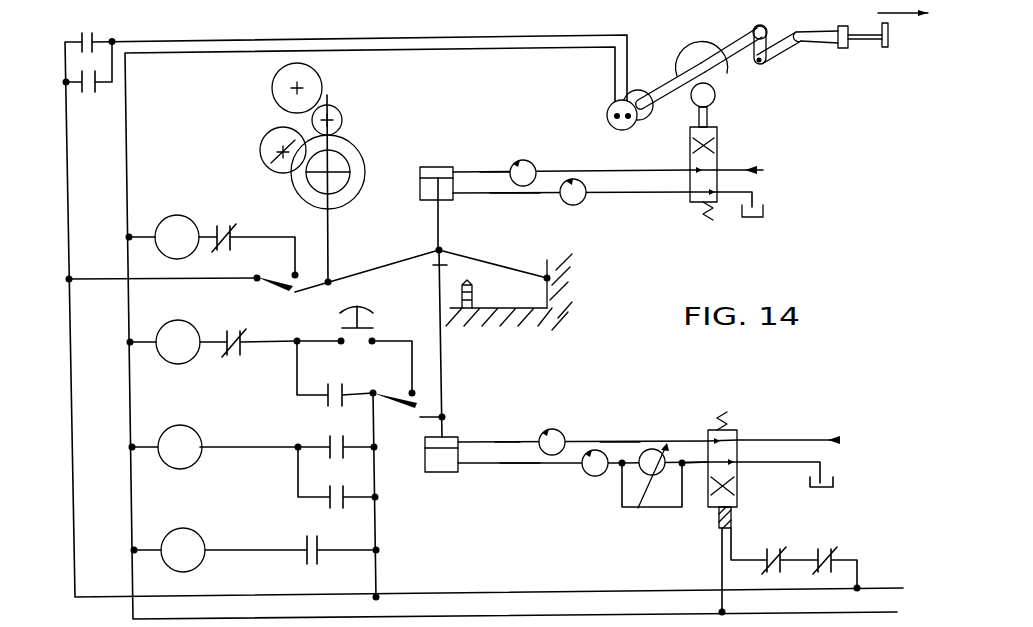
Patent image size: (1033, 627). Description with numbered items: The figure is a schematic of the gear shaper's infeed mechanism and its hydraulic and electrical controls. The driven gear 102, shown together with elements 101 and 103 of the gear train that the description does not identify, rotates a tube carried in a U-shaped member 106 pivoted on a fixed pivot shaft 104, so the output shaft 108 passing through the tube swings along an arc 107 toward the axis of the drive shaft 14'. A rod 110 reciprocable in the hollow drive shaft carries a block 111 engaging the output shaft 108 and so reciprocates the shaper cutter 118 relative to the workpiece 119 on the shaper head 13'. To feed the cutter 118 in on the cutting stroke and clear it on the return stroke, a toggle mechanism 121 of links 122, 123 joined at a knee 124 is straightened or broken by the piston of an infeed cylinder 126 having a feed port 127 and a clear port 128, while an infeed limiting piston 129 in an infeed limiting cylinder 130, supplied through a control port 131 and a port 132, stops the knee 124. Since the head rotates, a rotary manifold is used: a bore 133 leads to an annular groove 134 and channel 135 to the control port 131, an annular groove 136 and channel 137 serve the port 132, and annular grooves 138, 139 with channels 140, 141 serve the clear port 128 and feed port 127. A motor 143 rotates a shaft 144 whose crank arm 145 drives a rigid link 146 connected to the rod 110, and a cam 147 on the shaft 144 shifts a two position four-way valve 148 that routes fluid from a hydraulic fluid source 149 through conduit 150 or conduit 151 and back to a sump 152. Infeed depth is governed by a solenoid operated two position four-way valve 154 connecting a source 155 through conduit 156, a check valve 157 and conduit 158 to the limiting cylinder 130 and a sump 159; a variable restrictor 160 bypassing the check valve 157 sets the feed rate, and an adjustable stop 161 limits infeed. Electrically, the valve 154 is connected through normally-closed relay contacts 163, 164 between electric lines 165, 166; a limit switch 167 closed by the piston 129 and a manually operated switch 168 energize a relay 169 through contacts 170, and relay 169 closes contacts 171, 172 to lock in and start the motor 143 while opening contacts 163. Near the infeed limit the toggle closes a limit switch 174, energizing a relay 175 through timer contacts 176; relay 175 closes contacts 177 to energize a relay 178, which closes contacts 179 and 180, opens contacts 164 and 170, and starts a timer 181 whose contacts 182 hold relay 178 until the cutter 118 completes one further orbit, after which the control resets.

The motor 101 is at (318, 72).
The driven gear 102 is at (349, 142).
The pinion 103 is at (334, 107).
The pivot shaft 104 is at (330, 119).
The U-shaped member 106 is at (327, 240).
The arc 107 is at (364, 157).
The output shaft 108 is at (862, 40).
The rod 110 is at (812, 32).
The block 111 is at (840, 48).
The shaper cutter 118 is at (310, 186).
The workpiece 119 is at (267, 137).
The toggle mechanism 121 is at (572, 252).
The link 122 is at (490, 263).
The link 123 is at (357, 273).
The knee 124 is at (443, 246).
The infeed cylinder 126 is at (430, 167).
The feed port 127 is at (455, 171).
The clear port 128 is at (456, 198).
The infeed limiting piston 129 is at (444, 355).
The infeed limiting cylinder 130 is at (440, 473).
The control port 131 is at (462, 468).
The port 132 is at (462, 440).
The bore 133 is at (613, 472).
The annular groove 134 is at (590, 473).
The channel 135 is at (523, 468).
The annular groove 136 is at (560, 432).
The channel 137 is at (507, 438).
The annular groove 138 is at (578, 204).
The annular groove 139 is at (537, 158).
The channel 140 is at (505, 197).
The channel 141 is at (498, 163).
The motor 143 is at (614, 106).
The shaft 144 is at (668, 91).
The crank arm 145 is at (771, 34).
The rigid link 146 is at (738, 57).
The cam 147 is at (710, 41).
The two position four-way valve 148 is at (717, 126).
The hydraulic fluid source 149 is at (771, 162).
The conduit 150 is at (603, 168).
The conduit 151 is at (682, 195).
The sump 152 is at (793, 222).
The two position four-way valve 154 is at (737, 495).
The source 155 is at (838, 440).
The conduit 156 is at (693, 467).
The check valve 157 is at (656, 489).
The conduit 158 is at (613, 440).
The sump 159 is at (863, 488).
The variable restrictor 160 is at (665, 484).
The adjustable stop 161 is at (472, 284).
The normally-closed relay contacts 163 is at (830, 552).
The normally-closed relay contacts 164 is at (783, 552).
The electric line 165 is at (863, 587).
The electric line 166 is at (878, 612).
The normally-open limit switch 167 is at (403, 395).
The normally-open manually operated switch 168 is at (365, 322).
The relay 169 is at (163, 364).
The normally-closed contacts 170 is at (217, 353).
The normally-open relay contacts 171 is at (327, 391).
The normally-open relay contacts 172 is at (79, 39).
The normally-open limit switch 174 is at (273, 289).
The relay 175 is at (196, 210).
The normally-closed timer contacts 176 is at (213, 247).
The normally-open relay contacts 177 is at (328, 440).
The relay 178 is at (175, 470).
The normally-open relay contacts 179 is at (97, 85).
The normally-open relay contacts 180 is at (323, 550).
The timer 181 is at (198, 568).
The normally-open timer contacts 182 is at (335, 492).
The shaper head 13' is at (527, 292).
The drive shaft 14' is at (261, 161).